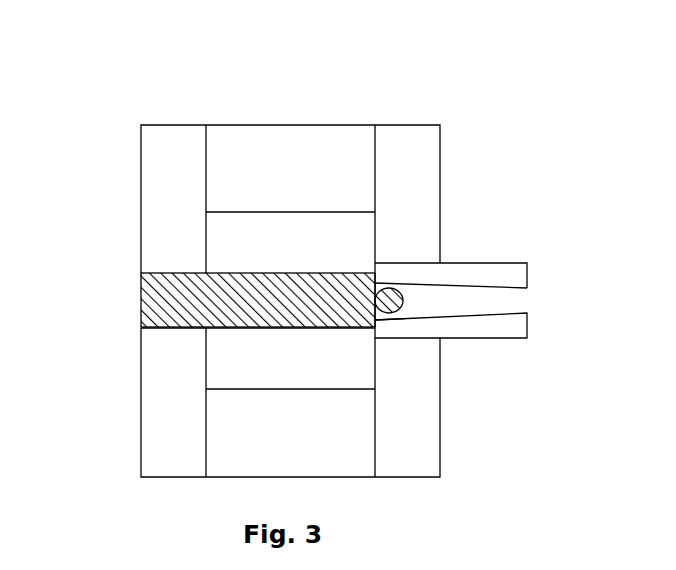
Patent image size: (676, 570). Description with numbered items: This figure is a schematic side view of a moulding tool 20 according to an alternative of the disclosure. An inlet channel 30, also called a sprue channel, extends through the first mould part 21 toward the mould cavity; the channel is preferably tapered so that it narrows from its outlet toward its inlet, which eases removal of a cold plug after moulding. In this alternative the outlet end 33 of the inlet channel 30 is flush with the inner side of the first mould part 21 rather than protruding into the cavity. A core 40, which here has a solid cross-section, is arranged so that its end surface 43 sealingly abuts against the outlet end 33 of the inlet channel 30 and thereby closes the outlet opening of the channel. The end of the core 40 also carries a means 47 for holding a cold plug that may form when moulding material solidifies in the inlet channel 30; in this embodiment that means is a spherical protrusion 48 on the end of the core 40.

The moulding tool 20 is at (361, 81).
The first mould part 21 is at (423, 400).
The inlet channel 30 is at (445, 295).
The outlet end 33 is at (374, 331).
The core 40 is at (175, 297).
The end surface 43 is at (379, 322).
The means for holding a cold plug 47 is at (381, 282).
The protrusion 48 is at (406, 308).